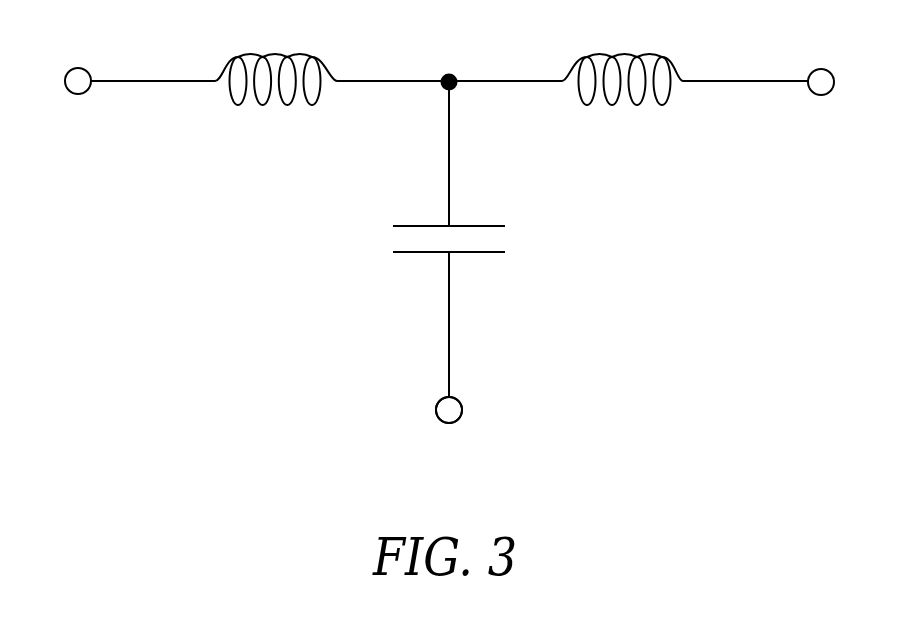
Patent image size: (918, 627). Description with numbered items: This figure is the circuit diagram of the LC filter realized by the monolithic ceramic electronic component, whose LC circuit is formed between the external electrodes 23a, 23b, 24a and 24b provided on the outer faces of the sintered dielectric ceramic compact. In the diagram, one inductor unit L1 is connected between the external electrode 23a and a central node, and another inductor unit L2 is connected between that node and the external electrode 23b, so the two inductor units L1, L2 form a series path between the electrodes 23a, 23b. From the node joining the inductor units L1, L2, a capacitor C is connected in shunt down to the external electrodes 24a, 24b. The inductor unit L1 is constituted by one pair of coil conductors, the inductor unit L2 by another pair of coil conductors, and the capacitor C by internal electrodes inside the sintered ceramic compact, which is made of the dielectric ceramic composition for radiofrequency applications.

The external electrode 23a is at (140, 100).
The external electrode 23b is at (762, 102).
The external electrode 24a is at (427, 432).
The external electrode 24b is at (470, 432).
The inductor unit L1 is at (276, 66).
The inductor unit L2 is at (622, 67).
The capacitor C is at (458, 239).